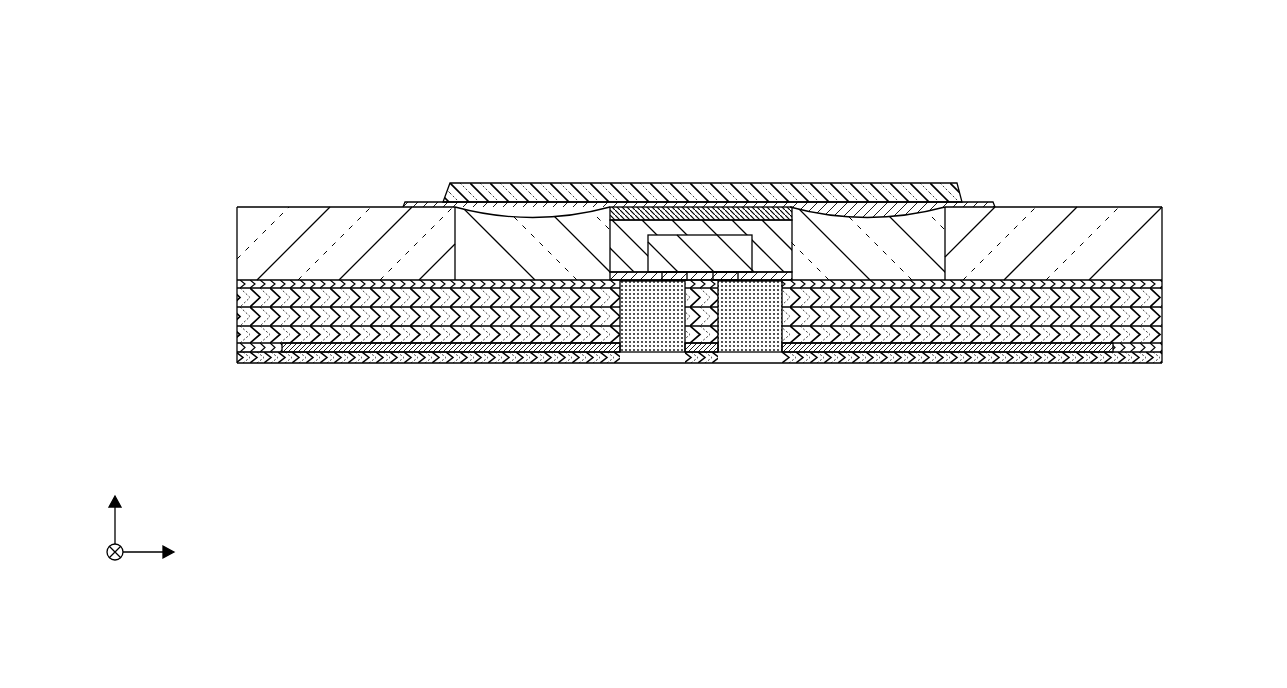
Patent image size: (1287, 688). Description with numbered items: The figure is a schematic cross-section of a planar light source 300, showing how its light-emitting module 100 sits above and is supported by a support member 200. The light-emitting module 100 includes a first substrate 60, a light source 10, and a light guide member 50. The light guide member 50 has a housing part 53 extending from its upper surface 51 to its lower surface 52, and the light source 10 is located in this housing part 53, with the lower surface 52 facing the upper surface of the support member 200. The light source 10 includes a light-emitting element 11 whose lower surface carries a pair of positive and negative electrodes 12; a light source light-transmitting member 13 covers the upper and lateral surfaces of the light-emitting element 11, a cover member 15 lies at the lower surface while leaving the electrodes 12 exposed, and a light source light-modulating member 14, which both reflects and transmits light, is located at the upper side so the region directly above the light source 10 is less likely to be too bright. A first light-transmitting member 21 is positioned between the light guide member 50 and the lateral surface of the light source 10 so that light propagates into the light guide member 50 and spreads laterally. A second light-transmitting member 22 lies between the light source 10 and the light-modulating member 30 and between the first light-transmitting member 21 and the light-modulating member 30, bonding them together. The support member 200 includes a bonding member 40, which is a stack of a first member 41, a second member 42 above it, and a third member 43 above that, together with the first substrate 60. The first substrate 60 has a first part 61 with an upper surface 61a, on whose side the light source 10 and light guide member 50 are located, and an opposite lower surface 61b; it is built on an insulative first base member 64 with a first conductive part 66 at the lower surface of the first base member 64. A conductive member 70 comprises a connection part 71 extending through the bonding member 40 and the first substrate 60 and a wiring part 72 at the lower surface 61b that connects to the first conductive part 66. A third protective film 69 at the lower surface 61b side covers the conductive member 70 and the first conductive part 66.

The light source 10 is at (818, 213).
The light-emitting element 11 is at (698, 253).
The pair of positive and negative electrodes 12 is at (673, 278).
The light source light-transmitting member 13 is at (765, 237).
The light source light-modulating member 14 is at (667, 213).
The cover member 15 is at (773, 275).
The first light-transmitting member 21 is at (560, 217).
The second light-transmitting member 22 is at (532, 215).
The light-modulating member 30 is at (620, 193).
The bonding member 40 is at (1170, 280).
The first member 41 is at (252, 318).
The second member 42 is at (252, 298).
The third member 43 is at (250, 283).
The light guide member 50 is at (1143, 245).
The upper surface 51 is at (1037, 207).
The lower surface 52 is at (980, 285).
The housing part 53 is at (890, 237).
The first substrate 60 is at (237, 333).
The first part 61 is at (508, 332).
The upper surface 61a is at (395, 327).
The lower surface 61b is at (390, 344).
The first base member 64 is at (910, 333).
The first conductive part 66 is at (322, 346).
The third protective film 69 is at (257, 351).
The conductive member 70 is at (645, 492).
The connection part 71 is at (650, 320).
The wiring part 72 is at (567, 350).
The light-emitting module 100 is at (1125, 200).
The support member 200 is at (1220, 280).
The planar light source 300 is at (1108, 80).